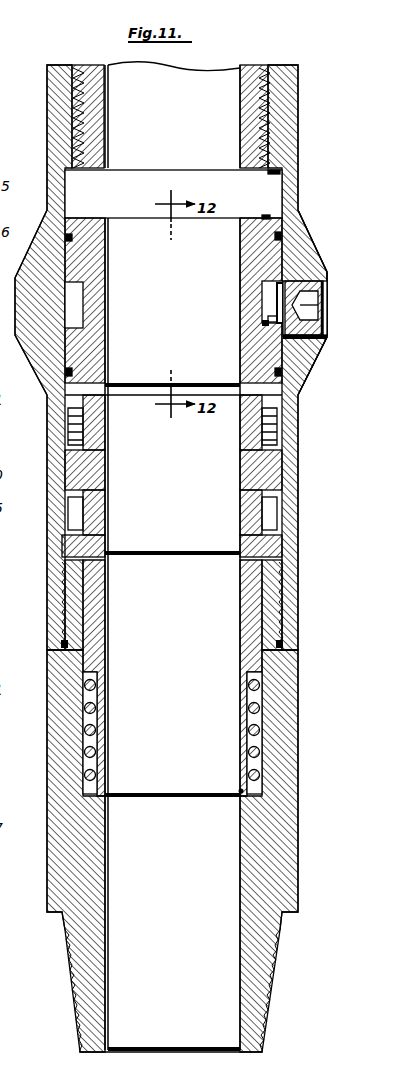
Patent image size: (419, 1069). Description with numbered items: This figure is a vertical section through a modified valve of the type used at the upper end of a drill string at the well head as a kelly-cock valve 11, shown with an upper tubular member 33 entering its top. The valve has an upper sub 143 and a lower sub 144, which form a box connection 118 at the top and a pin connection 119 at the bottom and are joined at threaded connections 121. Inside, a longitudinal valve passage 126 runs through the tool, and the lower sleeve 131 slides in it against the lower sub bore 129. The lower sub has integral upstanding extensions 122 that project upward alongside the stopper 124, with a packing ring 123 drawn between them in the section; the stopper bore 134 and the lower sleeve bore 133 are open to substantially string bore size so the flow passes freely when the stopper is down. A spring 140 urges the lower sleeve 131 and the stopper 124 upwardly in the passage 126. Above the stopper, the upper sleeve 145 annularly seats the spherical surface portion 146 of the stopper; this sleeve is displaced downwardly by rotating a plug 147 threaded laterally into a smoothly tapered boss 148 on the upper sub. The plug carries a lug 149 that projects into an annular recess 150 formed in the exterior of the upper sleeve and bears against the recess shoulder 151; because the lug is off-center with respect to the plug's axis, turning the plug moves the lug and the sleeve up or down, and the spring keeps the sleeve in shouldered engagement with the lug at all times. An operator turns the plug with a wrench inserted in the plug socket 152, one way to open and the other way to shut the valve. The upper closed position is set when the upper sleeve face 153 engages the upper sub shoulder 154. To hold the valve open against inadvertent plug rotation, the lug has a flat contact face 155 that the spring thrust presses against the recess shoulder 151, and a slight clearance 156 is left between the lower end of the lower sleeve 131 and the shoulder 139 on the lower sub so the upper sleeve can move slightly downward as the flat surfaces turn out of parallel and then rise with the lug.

The tool body 11 is at (45, 88).
The upper tubular member 33 is at (240, 129).
The box connection 118 is at (262, 158).
The upper sub 143 is at (290, 145).
The tapered boss 148 is at (305, 255).
The valve passage 126 is at (173, 609).
The upper sub shoulder 154 is at (272, 172).
The upper sleeve face 153 is at (264, 218).
The upper sleeve 145 is at (244, 272).
The annular recess 150 is at (277, 296).
The lug 149 is at (273, 319).
The recess shoulder 151 is at (85, 323).
The flat contact face 155 is at (283, 342).
The plug 147 is at (321, 287).
The plug socket 152 is at (320, 319).
The spherical surface portion 146 is at (256, 386).
The upstanding extensions 122 is at (262, 427).
The packing ring 123 is at (244, 459).
The stopper 124 is at (245, 510).
The stopper bore 134 is at (240, 534).
The lower sleeve bore 133 is at (240, 580).
The threaded connections 121 is at (276, 592).
The lower sleeve 131 is at (245, 606).
The lower sub bore 129 is at (262, 632).
The lower sub 144 is at (290, 712).
The spring 140 is at (250, 749).
The clearance 156 is at (237, 789).
The shoulder 139 is at (108, 796).
The pin connection 119 is at (270, 996).